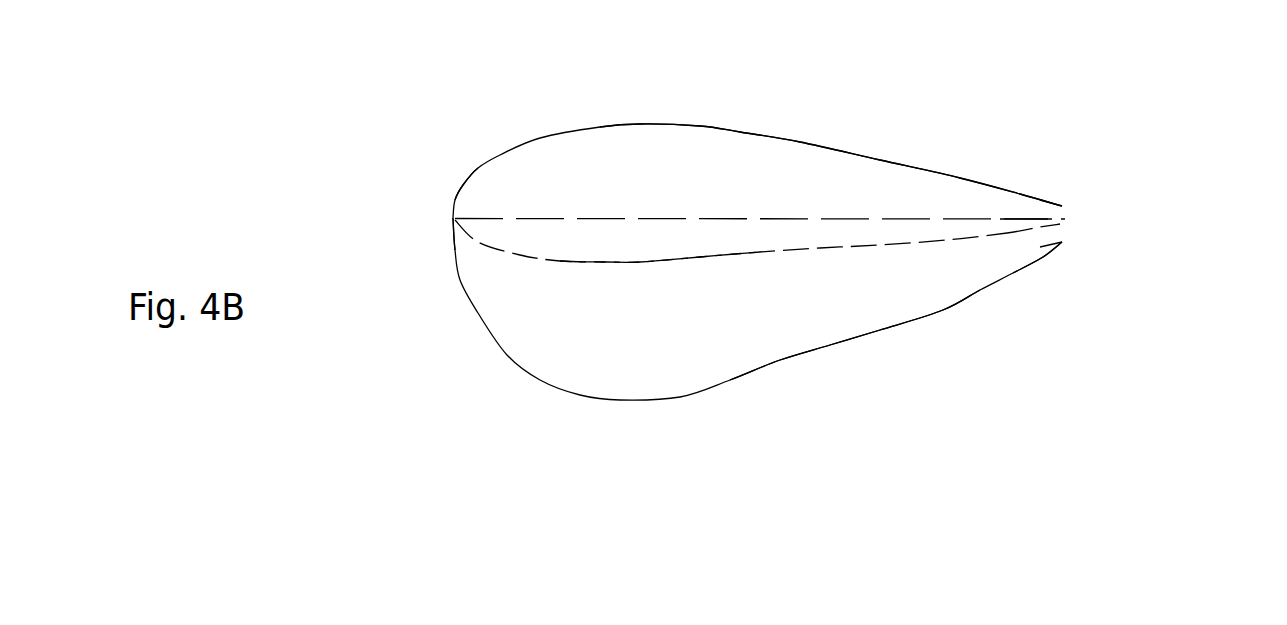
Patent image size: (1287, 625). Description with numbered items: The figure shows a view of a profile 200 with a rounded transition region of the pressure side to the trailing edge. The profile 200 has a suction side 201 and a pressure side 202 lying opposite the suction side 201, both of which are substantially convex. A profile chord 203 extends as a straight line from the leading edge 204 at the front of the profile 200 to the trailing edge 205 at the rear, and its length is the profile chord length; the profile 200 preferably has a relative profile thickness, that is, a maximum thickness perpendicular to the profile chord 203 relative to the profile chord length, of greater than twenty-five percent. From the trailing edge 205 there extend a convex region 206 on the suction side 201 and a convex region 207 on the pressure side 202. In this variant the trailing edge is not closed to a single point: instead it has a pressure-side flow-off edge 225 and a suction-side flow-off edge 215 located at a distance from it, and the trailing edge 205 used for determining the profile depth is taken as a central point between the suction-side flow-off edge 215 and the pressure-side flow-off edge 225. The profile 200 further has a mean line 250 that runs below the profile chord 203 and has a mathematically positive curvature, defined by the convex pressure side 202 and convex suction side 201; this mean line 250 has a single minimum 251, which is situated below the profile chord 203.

The profile 200 is at (998, 117).
The suction side 201 is at (909, 152).
The pressure side 202 is at (888, 345).
The profile chord 203 is at (563, 206).
The leading edge 204 is at (446, 215).
The trailing edge 205 is at (1080, 219).
The convex region on the suction side 206 is at (1032, 176).
The convex region on the pressure side 207 is at (1050, 263).
The suction-side flow-off edge 215 is at (1080, 205).
The pressure-side flow-off edge 225 is at (1078, 241).
The mean line 250 is at (468, 239).
The minimum 251 is at (596, 263).